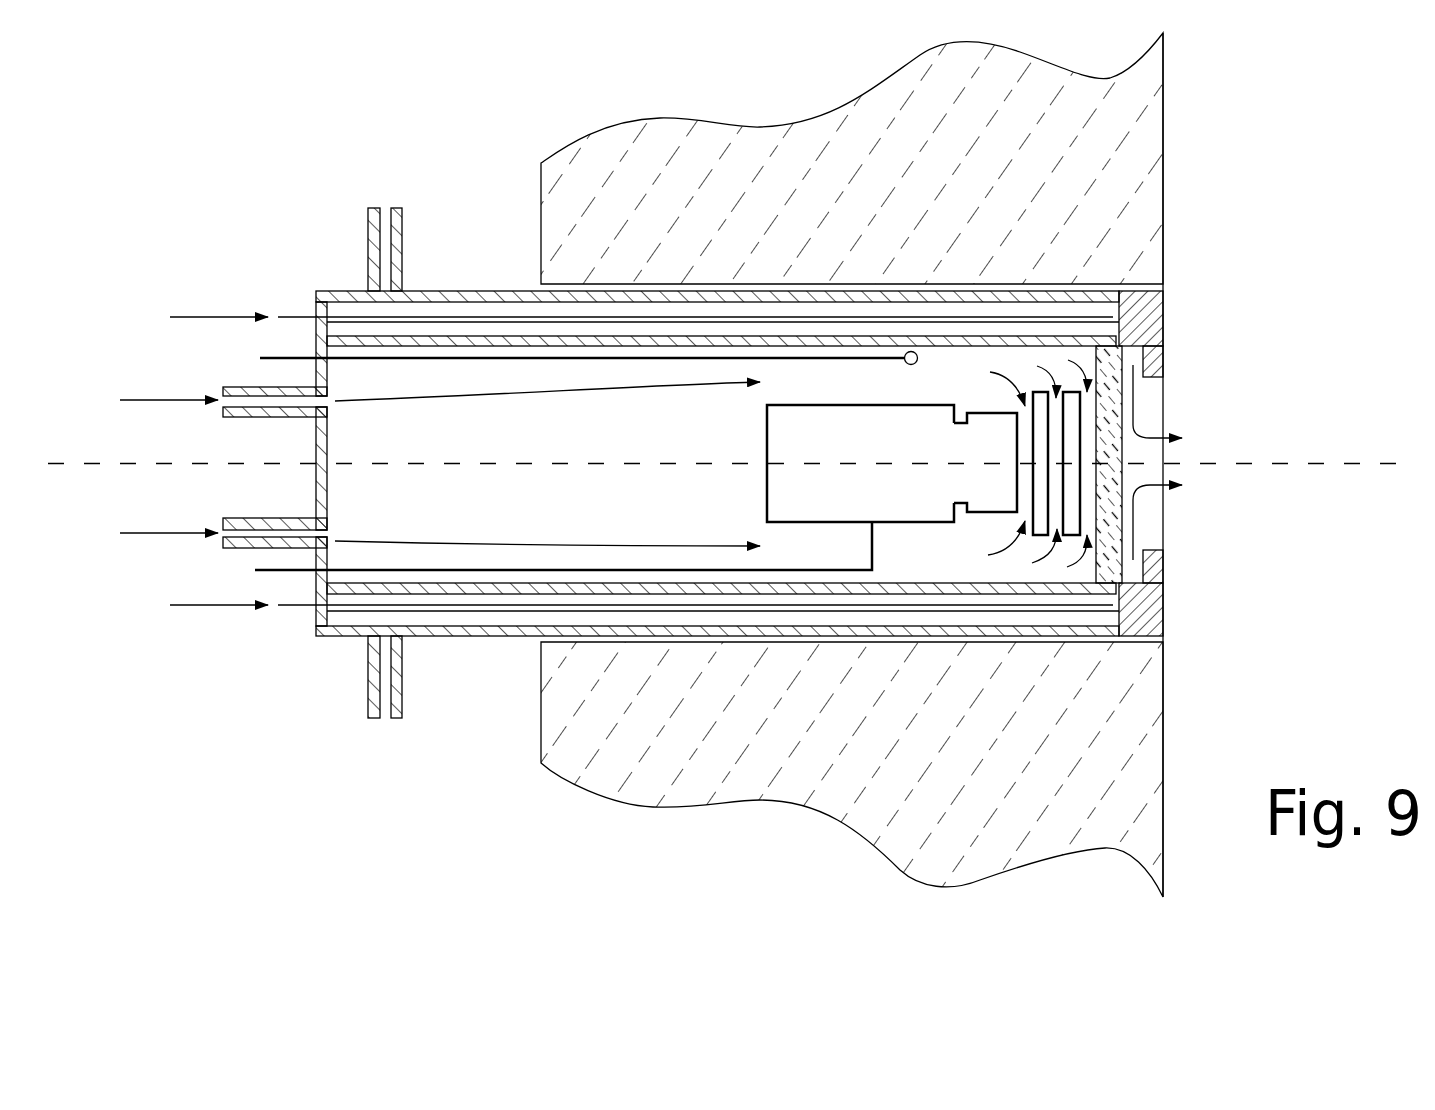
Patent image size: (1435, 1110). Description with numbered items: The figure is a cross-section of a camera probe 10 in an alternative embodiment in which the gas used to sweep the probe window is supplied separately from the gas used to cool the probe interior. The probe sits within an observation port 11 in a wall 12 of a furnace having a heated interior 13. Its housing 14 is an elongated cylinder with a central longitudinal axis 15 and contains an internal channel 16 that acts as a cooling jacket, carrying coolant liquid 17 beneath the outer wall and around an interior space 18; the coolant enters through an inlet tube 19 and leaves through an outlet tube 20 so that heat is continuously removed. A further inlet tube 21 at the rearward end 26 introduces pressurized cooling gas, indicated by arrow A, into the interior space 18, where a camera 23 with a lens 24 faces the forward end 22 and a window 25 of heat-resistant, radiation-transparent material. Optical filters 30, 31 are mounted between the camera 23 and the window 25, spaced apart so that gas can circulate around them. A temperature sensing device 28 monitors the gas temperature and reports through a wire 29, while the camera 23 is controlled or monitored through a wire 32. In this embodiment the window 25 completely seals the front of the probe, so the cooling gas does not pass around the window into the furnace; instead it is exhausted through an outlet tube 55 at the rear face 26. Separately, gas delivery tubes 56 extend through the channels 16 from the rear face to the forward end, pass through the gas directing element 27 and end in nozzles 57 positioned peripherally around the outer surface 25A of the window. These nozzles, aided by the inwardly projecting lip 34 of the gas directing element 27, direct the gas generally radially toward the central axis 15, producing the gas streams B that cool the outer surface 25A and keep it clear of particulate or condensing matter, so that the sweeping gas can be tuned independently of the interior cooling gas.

The camera probe 10 is at (316, 229).
The observation port 11 is at (526, 274).
The wall 12 is at (852, 158).
The heated interior 13 is at (1245, 465).
The housing 14 is at (528, 646).
The central longitudinal axis 15 is at (1355, 463).
The internal channel 16 is at (498, 306).
The coolant liquid 17 is at (385, 205).
The interior space 18 is at (547, 464).
The inlet tube 19 is at (404, 262).
The outlet tube 20 is at (365, 663).
The inlet tube 21 is at (236, 387).
The forward end 22 is at (1163, 308).
The camera 23 is at (860, 463).
The lens 24 is at (985, 462).
The window 25 is at (1123, 452).
The outer surface 25A is at (1123, 475).
The rearward end 26 is at (313, 477).
The gas directing element 27 is at (1155, 597).
The temperature sensing device 28 is at (906, 362).
The wire 29 is at (420, 358).
The optical filter 30 is at (1042, 437).
The optical filter 31 is at (1070, 447).
The wire 32 is at (262, 570).
The lip 34 is at (1163, 355).
The outlet tube 55 is at (238, 518).
The gas delivery tubes 56 is at (290, 316).
The nozzles 57 is at (1140, 552).
The arrow A is at (171, 462).
The gas streams B is at (1160, 405).